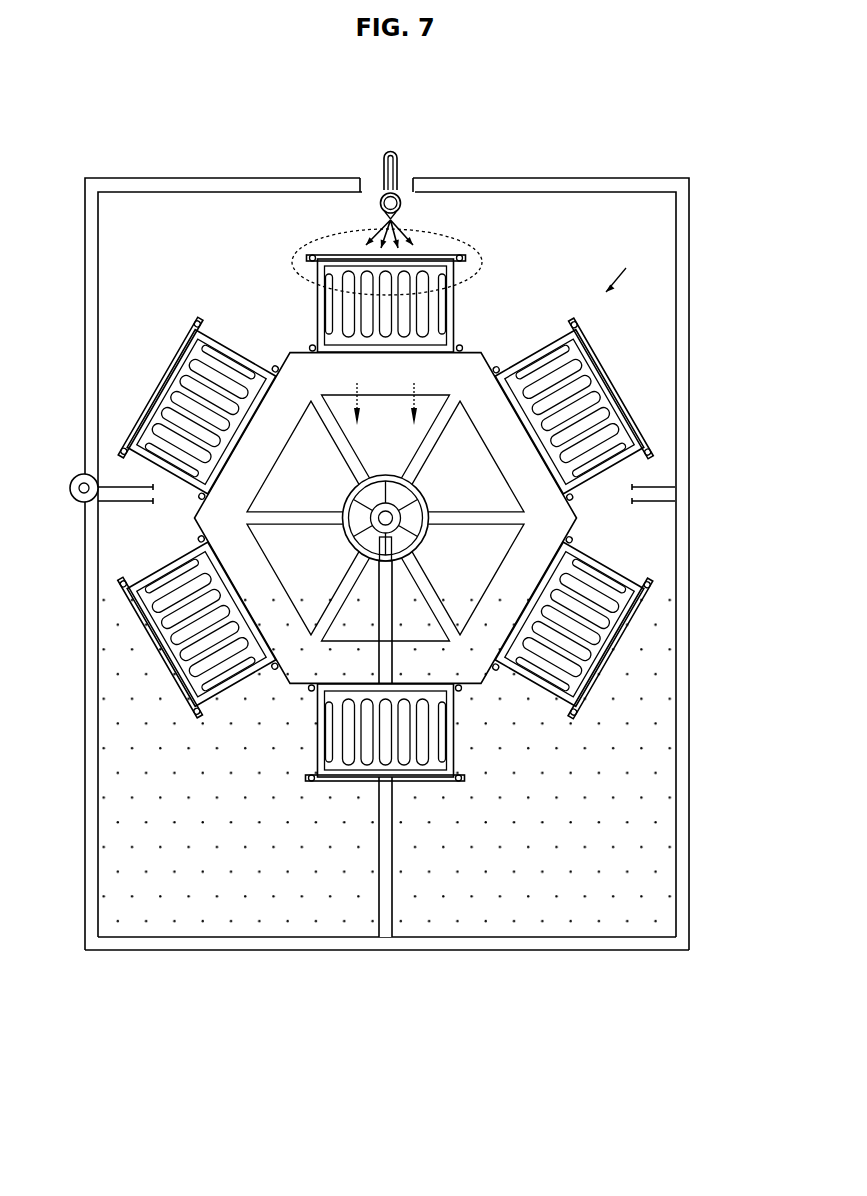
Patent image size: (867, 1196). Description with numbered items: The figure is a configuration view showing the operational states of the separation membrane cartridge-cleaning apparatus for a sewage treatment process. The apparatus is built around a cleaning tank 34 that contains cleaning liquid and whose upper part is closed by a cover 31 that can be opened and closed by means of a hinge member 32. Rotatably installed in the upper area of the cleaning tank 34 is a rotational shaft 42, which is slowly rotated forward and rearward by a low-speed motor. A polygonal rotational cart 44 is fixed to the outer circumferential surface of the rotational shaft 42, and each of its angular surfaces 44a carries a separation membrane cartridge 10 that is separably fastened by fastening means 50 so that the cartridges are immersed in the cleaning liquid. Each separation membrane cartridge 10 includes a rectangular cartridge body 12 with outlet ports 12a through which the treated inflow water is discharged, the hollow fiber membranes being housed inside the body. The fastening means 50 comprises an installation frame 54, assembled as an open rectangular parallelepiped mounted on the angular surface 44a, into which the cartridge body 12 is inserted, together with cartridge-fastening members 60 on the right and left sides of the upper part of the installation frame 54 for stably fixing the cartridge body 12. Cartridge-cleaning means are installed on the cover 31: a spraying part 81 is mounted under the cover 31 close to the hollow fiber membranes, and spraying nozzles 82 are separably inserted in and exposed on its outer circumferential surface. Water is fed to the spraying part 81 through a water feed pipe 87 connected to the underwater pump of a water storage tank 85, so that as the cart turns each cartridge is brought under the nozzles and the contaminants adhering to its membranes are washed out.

The separation membrane cartridge 10 is at (625, 390).
The cartridge body 12 is at (318, 338).
The outlet port 12a is at (278, 338).
The cover 31 is at (622, 191).
The hinge member 32 is at (78, 476).
The cleaning tank 34 is at (446, 942).
The rotational shaft 42 is at (347, 500).
The rotational cart 44 is at (497, 352).
The angular surface 44a is at (458, 350).
The fastening means 50 is at (128, 250).
The installation frame 54 is at (313, 343).
The cartridge-fastening member 60 is at (665, 452).
The spraying part 81 is at (403, 213).
The spraying nozzle 82 is at (378, 221).
The water storage tank 85 is at (384, 162).
The water feed pipe 87 is at (398, 162).